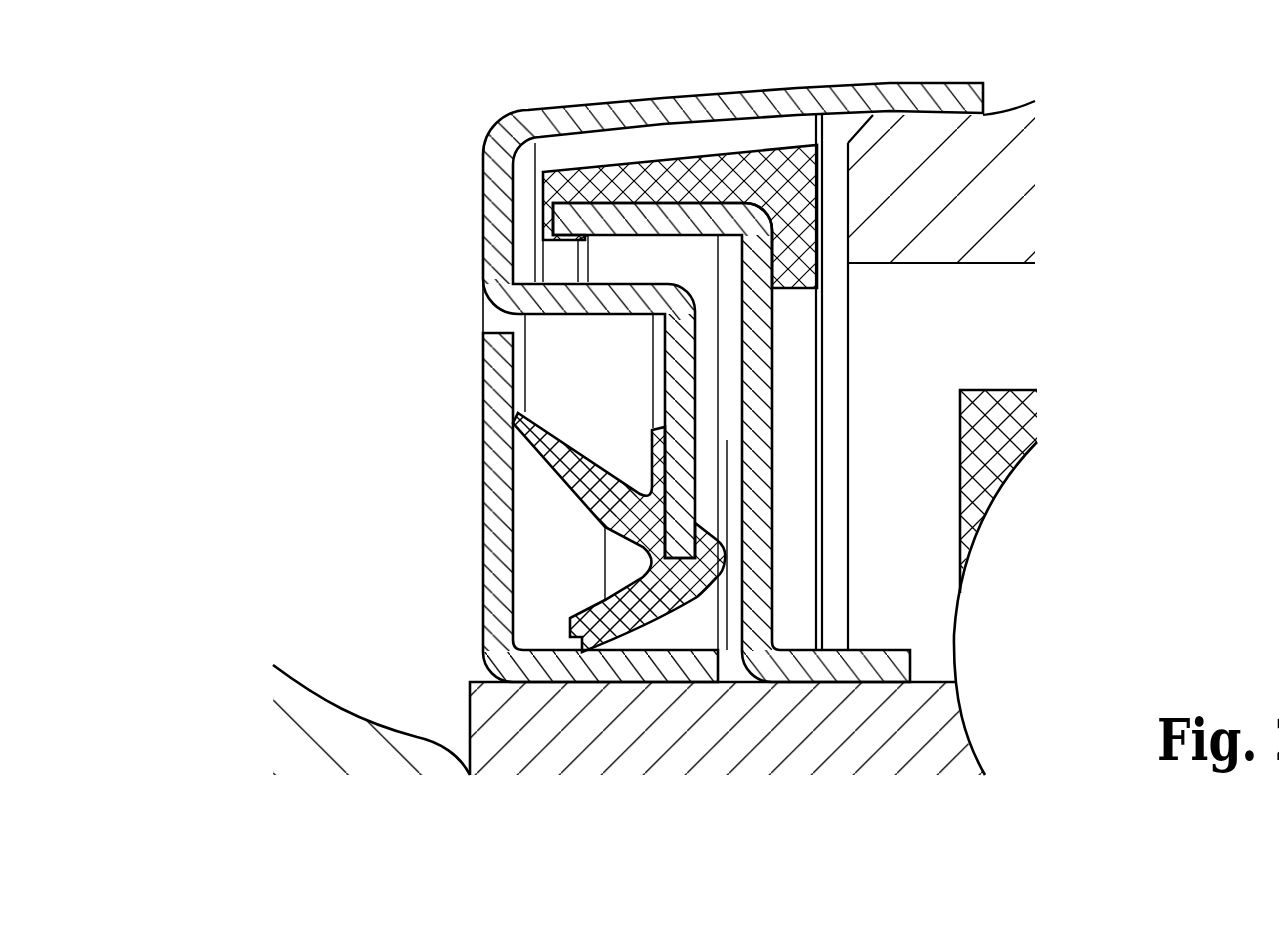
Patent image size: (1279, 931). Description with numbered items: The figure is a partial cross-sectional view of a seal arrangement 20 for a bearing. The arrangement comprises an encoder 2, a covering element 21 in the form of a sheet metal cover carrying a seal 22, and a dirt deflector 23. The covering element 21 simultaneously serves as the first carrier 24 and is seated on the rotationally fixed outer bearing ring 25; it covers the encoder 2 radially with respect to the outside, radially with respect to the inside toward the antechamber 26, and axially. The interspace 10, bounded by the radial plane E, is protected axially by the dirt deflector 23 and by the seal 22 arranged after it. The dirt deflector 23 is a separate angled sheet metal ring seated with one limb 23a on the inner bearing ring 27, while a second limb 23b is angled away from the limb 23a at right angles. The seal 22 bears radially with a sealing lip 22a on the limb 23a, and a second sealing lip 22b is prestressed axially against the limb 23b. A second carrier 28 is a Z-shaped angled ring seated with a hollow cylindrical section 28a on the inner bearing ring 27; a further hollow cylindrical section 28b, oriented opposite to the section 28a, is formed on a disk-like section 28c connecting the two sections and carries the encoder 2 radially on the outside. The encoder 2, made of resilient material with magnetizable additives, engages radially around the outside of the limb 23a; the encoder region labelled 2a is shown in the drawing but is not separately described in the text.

The encoder 2 is at (635, 160).
The elastic member upper portion 2a is at (740, 170).
The interspace 10 is at (913, 527).
The seal arrangement 20 is at (286, 191).
The covering element 21 is at (532, 112).
The seal 22 is at (554, 540).
The sealing lip 22a is at (583, 652).
The second sealing lip 22b is at (517, 423).
The dirt deflector 23 is at (551, 596).
The limb 23a is at (620, 672).
The limb 23b is at (483, 507).
The first carrier 24 is at (664, 310).
The outer bearing ring 25 is at (984, 143).
The antechamber 26 is at (567, 407).
The inner bearing ring 27 is at (958, 703).
The second carrier 28 is at (885, 442).
The hollow cylindrical section 28a is at (875, 675).
The hollow cylindrical section 28b is at (627, 217).
The disk-like section 28c is at (765, 352).
The radial plane E is at (852, 377).